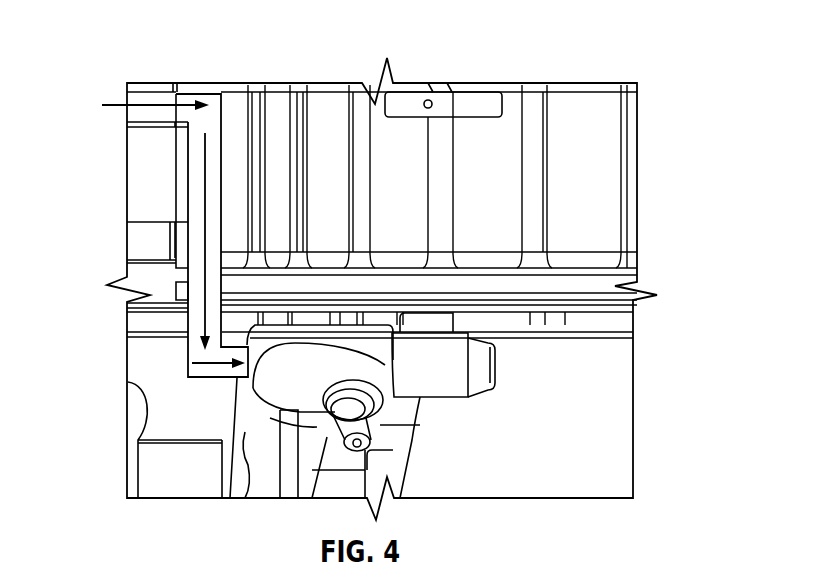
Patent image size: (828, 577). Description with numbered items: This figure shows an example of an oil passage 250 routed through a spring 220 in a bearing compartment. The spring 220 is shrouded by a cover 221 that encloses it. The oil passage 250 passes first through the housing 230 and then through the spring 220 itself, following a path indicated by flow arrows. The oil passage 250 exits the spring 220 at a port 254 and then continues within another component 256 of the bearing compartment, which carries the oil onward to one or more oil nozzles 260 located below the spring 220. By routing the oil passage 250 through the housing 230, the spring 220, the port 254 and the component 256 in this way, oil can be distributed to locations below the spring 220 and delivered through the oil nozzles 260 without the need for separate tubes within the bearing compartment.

The spring 220 is at (200, 90).
The cover 221 is at (330, 82).
The housing 230 is at (147, 178).
The oil passage 250 is at (118, 102).
The port 254 is at (188, 305).
The component 256 is at (155, 387).
The oil nozzle 260 is at (443, 375).